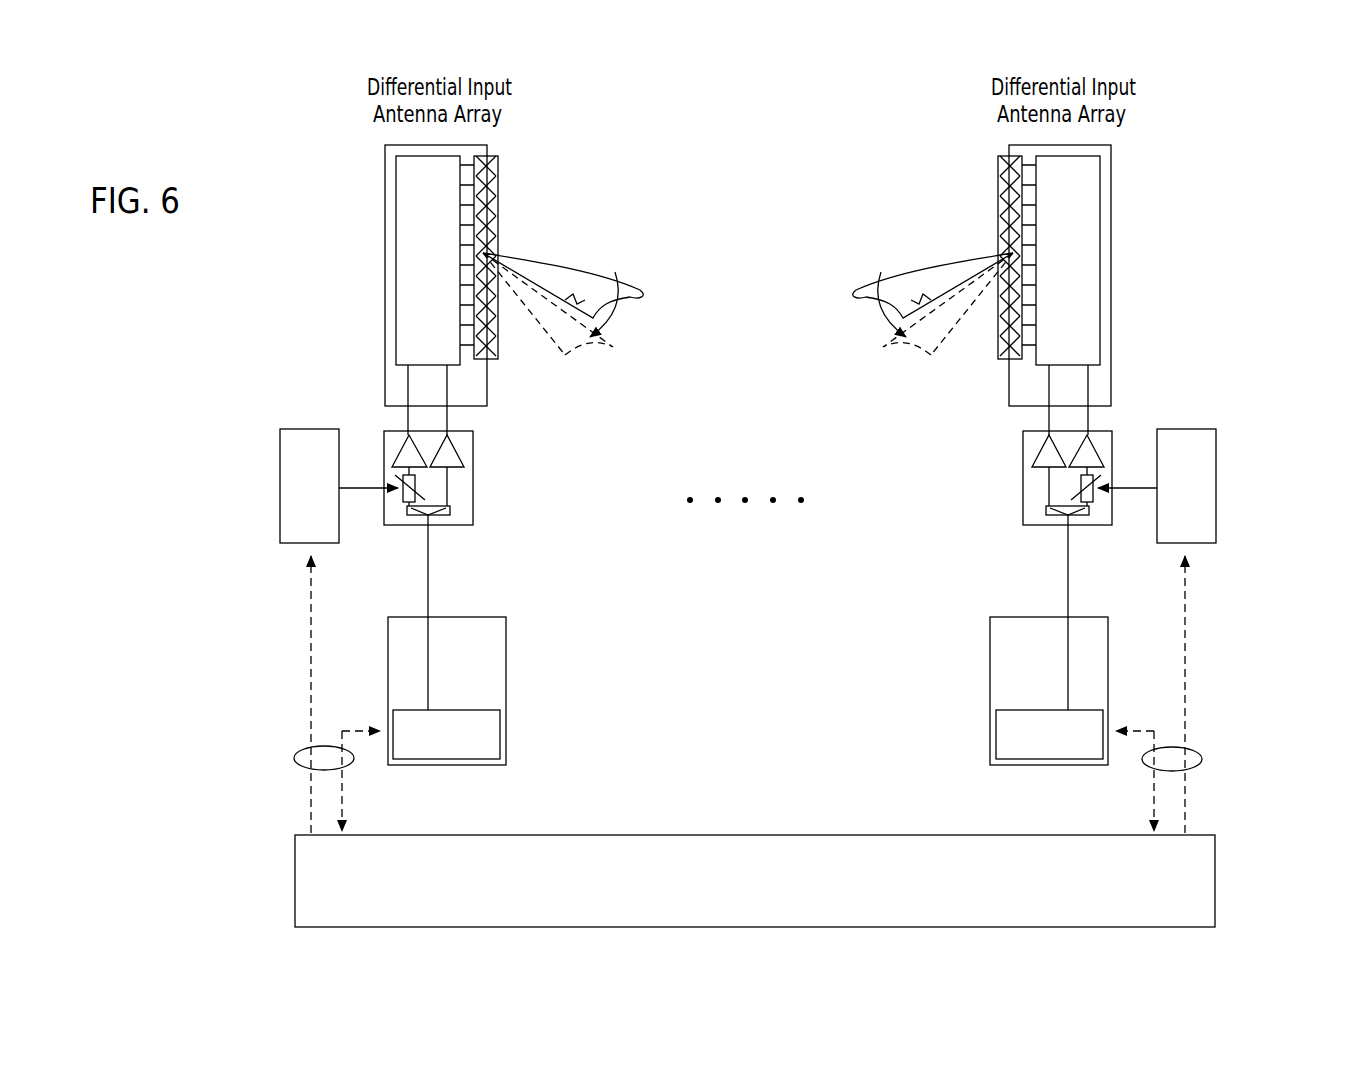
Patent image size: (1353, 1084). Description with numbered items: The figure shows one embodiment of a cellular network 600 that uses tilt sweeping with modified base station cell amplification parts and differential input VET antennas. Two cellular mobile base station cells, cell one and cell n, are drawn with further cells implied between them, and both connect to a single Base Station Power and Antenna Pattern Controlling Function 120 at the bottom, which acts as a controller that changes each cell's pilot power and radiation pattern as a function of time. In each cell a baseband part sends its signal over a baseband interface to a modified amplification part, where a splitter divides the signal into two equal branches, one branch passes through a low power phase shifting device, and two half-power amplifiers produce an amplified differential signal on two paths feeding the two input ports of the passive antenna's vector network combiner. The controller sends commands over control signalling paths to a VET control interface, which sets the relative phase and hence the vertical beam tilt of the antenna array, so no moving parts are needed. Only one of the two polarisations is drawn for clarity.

The cellular network 600 is at (774, 661).
The Base Station Power and Antenna Pattern Controlling Function 120 is at (707, 853).